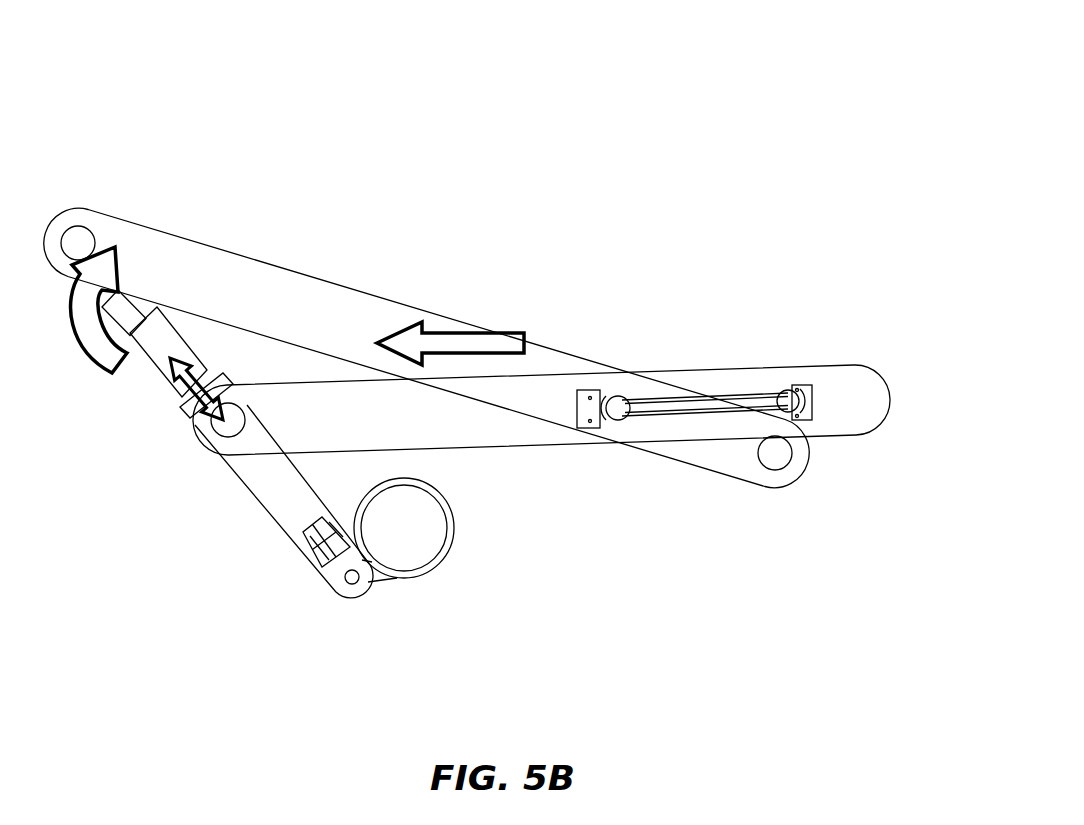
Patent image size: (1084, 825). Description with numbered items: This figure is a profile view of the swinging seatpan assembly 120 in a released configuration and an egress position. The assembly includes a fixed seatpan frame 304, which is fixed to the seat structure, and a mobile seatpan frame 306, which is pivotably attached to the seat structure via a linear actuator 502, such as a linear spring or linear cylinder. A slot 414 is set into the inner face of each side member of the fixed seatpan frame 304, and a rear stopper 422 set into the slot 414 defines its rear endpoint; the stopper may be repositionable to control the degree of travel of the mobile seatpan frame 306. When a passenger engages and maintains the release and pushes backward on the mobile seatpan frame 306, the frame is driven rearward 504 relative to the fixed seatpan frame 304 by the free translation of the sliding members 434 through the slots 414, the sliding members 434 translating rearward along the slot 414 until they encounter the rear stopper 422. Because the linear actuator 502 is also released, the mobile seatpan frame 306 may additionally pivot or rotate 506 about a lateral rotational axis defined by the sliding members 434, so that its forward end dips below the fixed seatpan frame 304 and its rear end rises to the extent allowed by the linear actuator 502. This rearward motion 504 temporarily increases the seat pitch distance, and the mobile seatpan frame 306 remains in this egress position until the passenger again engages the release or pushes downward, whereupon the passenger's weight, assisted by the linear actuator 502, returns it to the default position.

The swinging seatpan assembly 120 is at (116, 79).
The rearward translation / rotation 506 is at (102, 277).
The linear actuator 502 is at (165, 350).
The mobile seatpan frame 306 is at (290, 303).
The rearward motion 504 is at (487, 342).
The sliding member 434 is at (622, 398).
The slot 414 is at (743, 408).
The fixed seatpan frame 304 is at (845, 390).
The rear stopper 422 is at (585, 408).